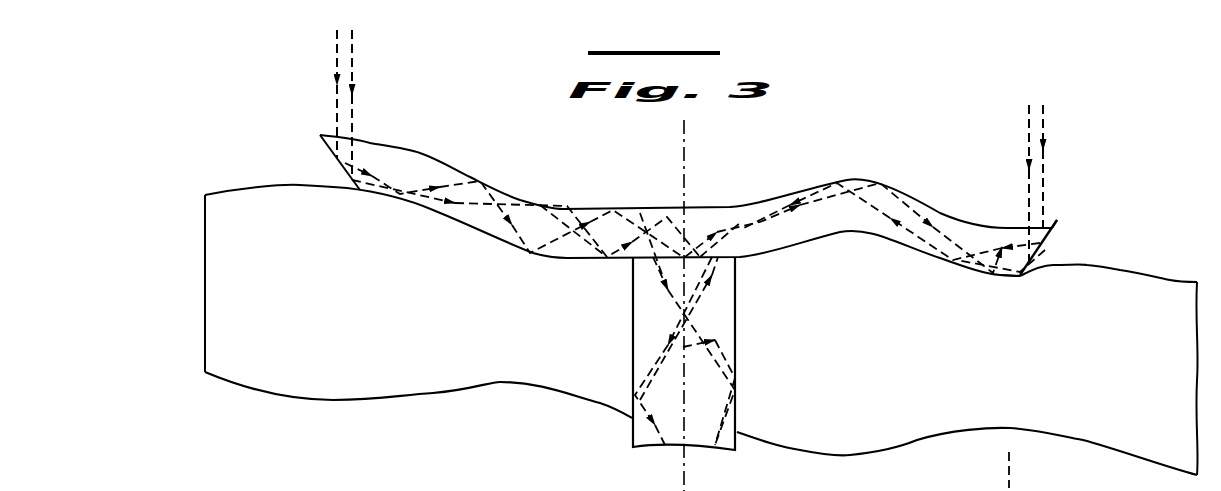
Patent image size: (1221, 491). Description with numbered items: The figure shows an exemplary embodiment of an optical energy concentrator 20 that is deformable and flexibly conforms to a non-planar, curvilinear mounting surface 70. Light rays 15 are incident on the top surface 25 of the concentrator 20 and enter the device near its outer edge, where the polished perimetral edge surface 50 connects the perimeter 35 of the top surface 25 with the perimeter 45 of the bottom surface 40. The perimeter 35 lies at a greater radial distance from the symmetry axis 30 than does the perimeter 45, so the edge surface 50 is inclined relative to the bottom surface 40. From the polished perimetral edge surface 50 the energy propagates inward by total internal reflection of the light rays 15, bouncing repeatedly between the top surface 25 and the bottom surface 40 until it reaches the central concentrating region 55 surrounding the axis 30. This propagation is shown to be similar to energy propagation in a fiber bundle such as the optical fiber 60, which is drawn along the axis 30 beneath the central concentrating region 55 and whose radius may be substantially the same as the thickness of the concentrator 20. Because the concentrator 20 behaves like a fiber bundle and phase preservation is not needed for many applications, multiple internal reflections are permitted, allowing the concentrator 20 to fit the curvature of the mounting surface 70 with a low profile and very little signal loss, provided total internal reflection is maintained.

The light rays 15 is at (333, 70).
The optical energy concentrator 20 is at (727, 190).
The top surface 25 is at (790, 190).
The symmetry axis 30 is at (690, 147).
The perimeter of top surface 35 is at (1058, 224).
The bottom surface 40 is at (830, 235).
The perimeter of bottom surface 45 is at (1020, 278).
The polished perimetral edge surface 50 is at (1040, 255).
The central concentrating region 55 is at (660, 194).
The electromagnetic waveguide 60 is at (730, 345).
The mounting surface 70 is at (213, 245).